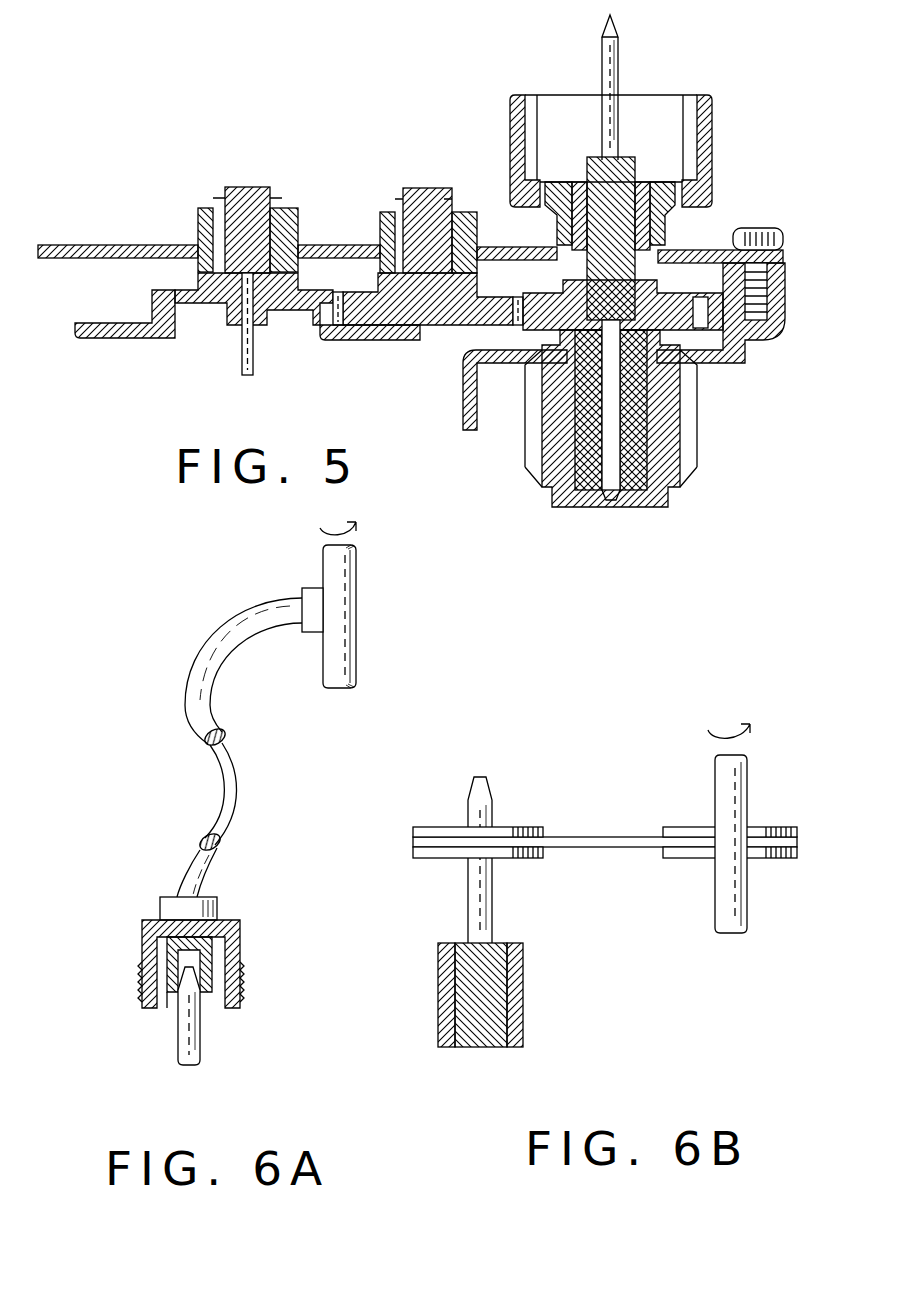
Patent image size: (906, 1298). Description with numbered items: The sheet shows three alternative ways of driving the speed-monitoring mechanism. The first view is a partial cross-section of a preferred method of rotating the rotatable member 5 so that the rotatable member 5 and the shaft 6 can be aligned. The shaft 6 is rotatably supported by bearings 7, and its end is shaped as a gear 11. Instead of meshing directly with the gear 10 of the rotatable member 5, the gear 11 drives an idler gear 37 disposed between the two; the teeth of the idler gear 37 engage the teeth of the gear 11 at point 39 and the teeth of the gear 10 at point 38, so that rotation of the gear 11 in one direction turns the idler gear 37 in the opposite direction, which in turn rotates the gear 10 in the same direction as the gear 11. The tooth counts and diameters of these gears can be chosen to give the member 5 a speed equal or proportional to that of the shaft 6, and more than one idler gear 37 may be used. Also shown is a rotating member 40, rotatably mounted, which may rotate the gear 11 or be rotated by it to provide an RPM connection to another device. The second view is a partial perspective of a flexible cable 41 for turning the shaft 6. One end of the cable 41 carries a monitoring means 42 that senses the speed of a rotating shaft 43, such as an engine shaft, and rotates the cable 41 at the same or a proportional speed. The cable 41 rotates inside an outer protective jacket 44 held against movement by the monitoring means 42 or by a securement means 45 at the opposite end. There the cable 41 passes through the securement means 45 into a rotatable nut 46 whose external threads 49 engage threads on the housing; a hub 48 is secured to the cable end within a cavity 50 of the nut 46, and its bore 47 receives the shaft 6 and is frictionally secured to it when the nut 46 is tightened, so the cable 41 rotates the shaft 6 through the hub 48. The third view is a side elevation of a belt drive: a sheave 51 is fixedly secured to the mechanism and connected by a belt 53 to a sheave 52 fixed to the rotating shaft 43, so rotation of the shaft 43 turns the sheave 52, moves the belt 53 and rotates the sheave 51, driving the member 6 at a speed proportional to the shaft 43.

In FIG. 5, the rotatable member 5 is at (248, 192).
In FIG. 5, the shaft 6 is at (612, 58).
In FIG. 6A, the shaft 6 is at (193, 1030).
In FIG. 6B, the shaft 6 is at (480, 888).
In FIG. 6B, the bearings 7 is at (510, 998).
In FIG. 5, the gear 10 is at (318, 290).
In FIG. 5, the gear 11 is at (683, 290).
In FIG. 5, the idler gear 37 is at (410, 300).
In FIG. 5, the engagement point 38 is at (333, 312).
In FIG. 5, the engagement point 39 is at (510, 312).
In FIG. 5, the rotating member 40 is at (546, 487).
In FIG. 6A, the flexible cable 41 is at (230, 806).
In FIG. 6A, the monitoring means 42 is at (301, 595).
In FIG. 6A, the rotating shaft 43 is at (345, 623).
In FIG. 6B, the rotating shaft 43 is at (727, 880).
In FIG. 6A, the outer protective jacket 44 is at (228, 640).
In FIG. 6A, the securement means 45 is at (212, 910).
In FIG. 6A, the rotatable nut 46 is at (233, 930).
In FIG. 6A, the bore 47 is at (188, 960).
In FIG. 6A, the hub 48 is at (212, 955).
In FIG. 6A, the external threads 49 is at (240, 998).
In FIG. 6A, the cavity 50 is at (167, 992).
In FIG. 6B, the sheave 51 is at (522, 827).
In FIG. 6B, the sheave 52 is at (760, 827).
In FIG. 6B, the belt 53 is at (598, 838).